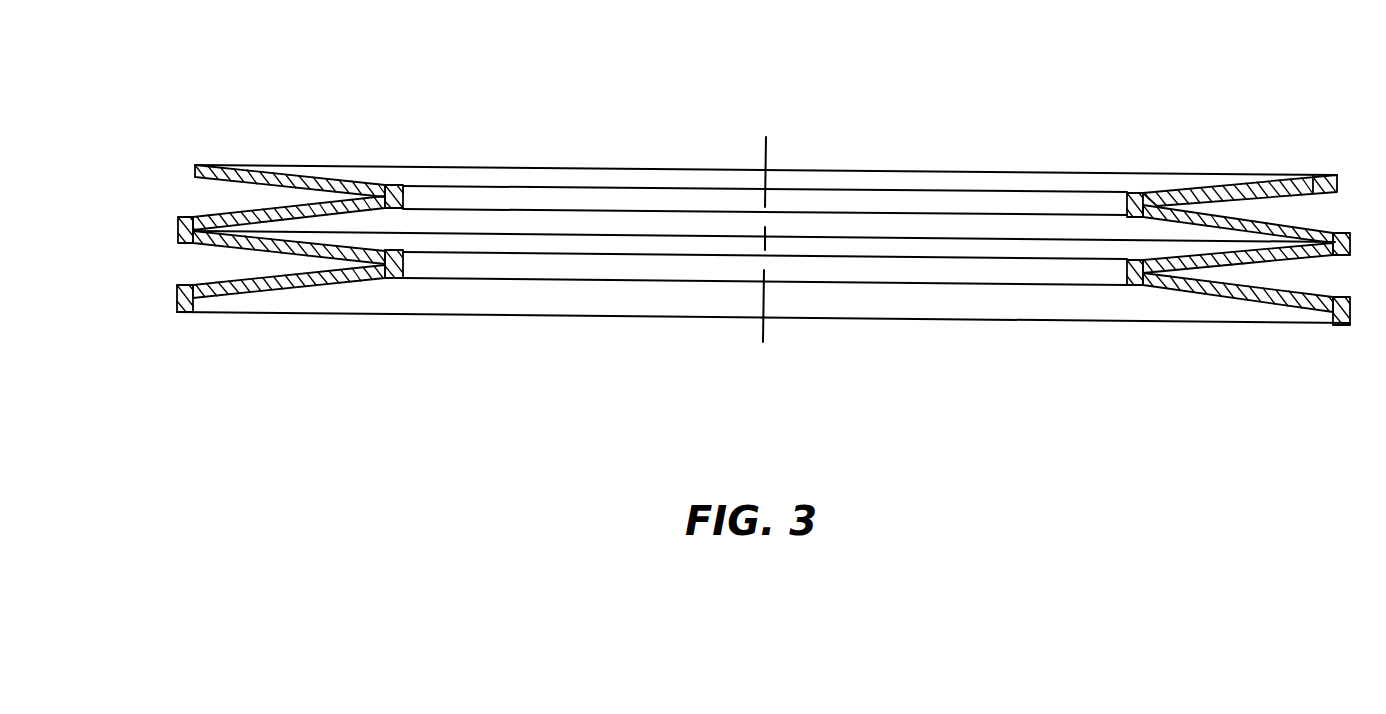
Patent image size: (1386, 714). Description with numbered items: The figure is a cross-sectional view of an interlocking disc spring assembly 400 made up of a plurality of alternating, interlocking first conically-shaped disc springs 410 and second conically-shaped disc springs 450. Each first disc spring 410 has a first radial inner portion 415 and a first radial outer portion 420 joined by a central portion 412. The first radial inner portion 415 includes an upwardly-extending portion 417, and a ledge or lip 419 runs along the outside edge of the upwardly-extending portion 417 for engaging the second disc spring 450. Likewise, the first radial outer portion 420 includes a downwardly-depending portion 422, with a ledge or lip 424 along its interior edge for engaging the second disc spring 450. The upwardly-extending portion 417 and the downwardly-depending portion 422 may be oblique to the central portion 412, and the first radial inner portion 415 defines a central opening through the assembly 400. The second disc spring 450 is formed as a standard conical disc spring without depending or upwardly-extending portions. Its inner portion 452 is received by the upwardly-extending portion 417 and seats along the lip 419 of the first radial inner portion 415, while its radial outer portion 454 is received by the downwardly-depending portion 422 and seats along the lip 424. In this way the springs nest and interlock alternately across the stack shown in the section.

The interlocking disc spring assembly 400 is at (496, 405).
The first conically-shaped disc spring 410 is at (247, 210).
The central portion 412 is at (285, 295).
The first radial inner portion 415 is at (432, 197).
The upwardly-extending portion 417 is at (392, 187).
The ledge or lip 419 is at (1155, 190).
The first radial outer portion 420 is at (178, 232).
The downwardly-depending portion 422 is at (185, 313).
The ledge or lip 424 is at (1238, 314).
The second conically-shaped disc spring 450 is at (197, 165).
The inner portion 452 is at (383, 185).
The radial outer portion 454 is at (1323, 243).